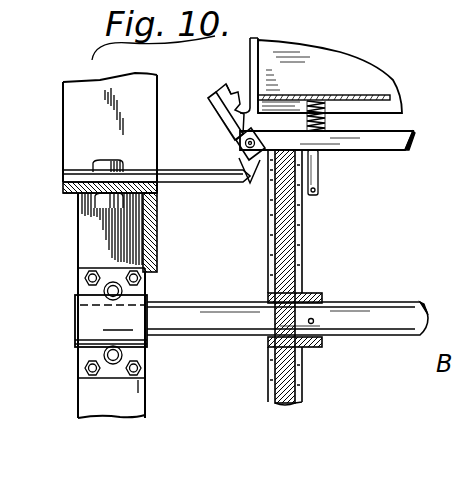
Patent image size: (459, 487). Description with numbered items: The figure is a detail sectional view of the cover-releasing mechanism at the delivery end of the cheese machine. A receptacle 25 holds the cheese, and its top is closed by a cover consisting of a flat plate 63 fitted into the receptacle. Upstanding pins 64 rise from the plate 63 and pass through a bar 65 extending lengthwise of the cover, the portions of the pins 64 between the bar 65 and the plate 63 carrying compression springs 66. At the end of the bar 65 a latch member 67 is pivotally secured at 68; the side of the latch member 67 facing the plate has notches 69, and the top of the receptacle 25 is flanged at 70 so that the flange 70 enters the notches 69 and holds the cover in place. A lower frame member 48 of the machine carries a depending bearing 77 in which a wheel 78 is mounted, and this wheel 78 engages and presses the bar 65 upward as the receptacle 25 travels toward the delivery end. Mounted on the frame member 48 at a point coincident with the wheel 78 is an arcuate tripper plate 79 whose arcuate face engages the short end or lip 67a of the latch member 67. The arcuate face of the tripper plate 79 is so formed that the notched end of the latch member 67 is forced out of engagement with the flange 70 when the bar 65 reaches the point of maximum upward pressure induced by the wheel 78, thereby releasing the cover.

The receptacle 25 is at (321, 48).
The flat plate 63 is at (384, 93).
The bar 65 is at (414, 131).
The compression spring 66 is at (325, 120).
The upstanding pin 64 is at (320, 174).
The flange 70 is at (208, 80).
The notch 69 is at (232, 93).
The latch member 67 is at (222, 122).
The pivot 68 is at (244, 143).
The arcuate tripper plate 79 is at (205, 181).
The short end or lip 67a is at (243, 187).
The lower frame member 48 is at (158, 253).
The wheel 78 is at (275, 248).
The bearing 77 is at (92, 300).